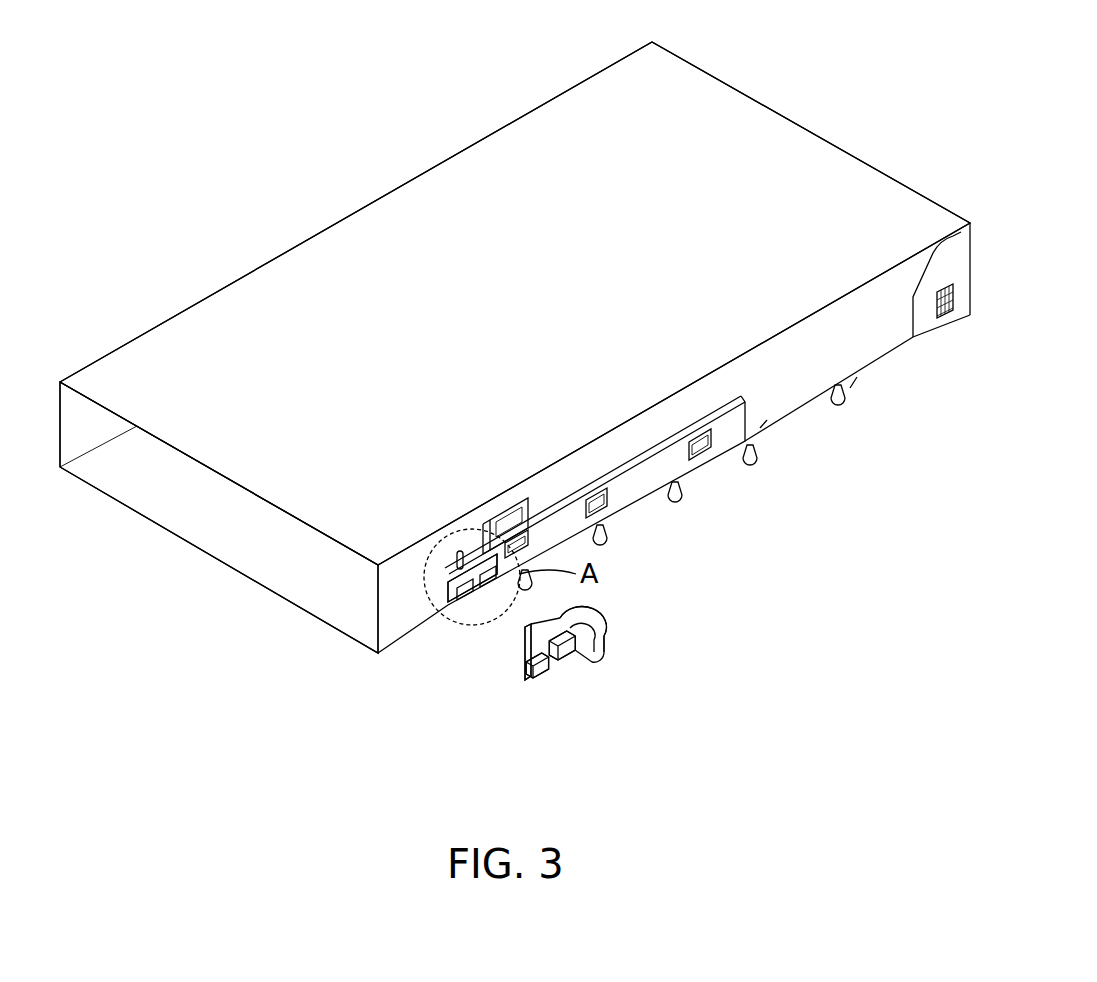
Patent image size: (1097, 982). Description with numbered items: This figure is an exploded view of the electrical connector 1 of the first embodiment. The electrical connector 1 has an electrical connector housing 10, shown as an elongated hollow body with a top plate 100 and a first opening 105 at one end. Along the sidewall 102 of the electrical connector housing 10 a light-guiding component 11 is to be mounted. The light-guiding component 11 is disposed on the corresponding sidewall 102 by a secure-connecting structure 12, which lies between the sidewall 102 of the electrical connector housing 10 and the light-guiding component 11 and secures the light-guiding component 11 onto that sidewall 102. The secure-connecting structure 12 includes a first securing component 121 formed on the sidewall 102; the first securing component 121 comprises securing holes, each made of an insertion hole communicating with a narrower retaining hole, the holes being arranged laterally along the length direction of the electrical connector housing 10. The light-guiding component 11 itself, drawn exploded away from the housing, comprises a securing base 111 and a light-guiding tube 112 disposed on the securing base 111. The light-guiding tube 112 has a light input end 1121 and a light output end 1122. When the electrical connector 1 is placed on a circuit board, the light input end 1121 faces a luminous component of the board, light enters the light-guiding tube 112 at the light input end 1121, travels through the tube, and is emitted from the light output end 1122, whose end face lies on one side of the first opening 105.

The electrical connector 1 is at (196, 230).
The electrical connector housing 10 is at (354, 212).
The top plate 100 is at (795, 170).
The sidewall 102 is at (775, 378).
The first opening 105 is at (251, 566).
The light-guiding component 11 is at (575, 686).
The securing base 111 is at (578, 663).
The light-guiding tube 112 is at (598, 623).
The light input end 1121 is at (593, 655).
The light output end 1122 is at (523, 680).
The secure-connecting structure 12 is at (478, 614).
The first securing component 121 is at (453, 603).